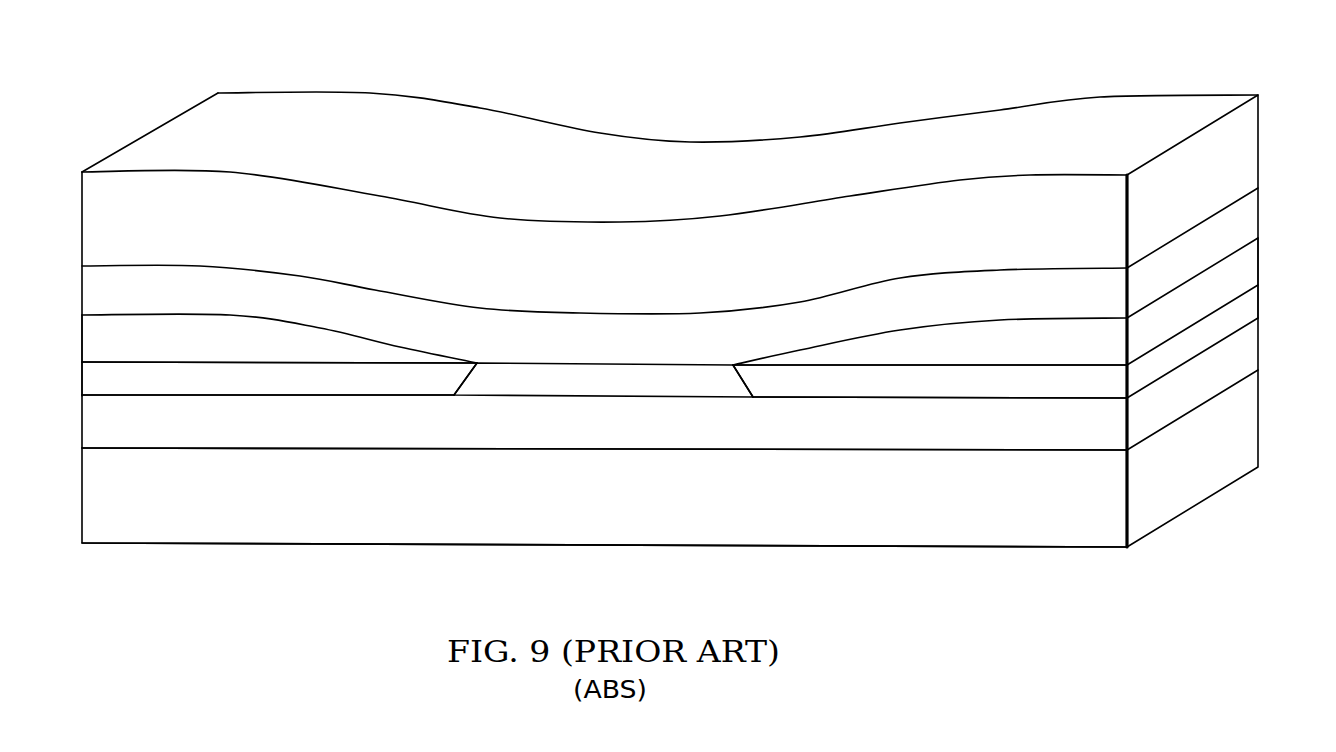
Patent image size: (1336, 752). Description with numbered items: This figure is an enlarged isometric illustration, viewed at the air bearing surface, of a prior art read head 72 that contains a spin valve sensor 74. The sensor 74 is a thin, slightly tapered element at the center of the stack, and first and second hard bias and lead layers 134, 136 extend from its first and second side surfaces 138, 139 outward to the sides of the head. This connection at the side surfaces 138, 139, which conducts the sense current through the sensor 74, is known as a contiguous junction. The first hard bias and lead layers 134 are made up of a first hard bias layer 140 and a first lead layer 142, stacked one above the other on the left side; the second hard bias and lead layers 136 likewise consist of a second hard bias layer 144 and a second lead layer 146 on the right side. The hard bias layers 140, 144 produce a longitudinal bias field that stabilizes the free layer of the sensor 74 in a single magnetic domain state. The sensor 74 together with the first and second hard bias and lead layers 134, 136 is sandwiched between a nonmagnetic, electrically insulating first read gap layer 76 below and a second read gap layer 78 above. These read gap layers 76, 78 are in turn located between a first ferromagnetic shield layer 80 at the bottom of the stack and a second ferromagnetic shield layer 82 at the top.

The read head 72 is at (751, 96).
The spin valve sensor 74 is at (513, 349).
The first read gap layer 76 is at (393, 435).
The second read gap layer 78 is at (371, 305).
The first ferromagnetic shield layer 80 is at (197, 517).
The second ferromagnetic shield layer 82 is at (511, 133).
The first hard bias and lead layers 134 is at (75, 318).
The second hard bias and lead layers 136 is at (1265, 238).
The first side surface 138 is at (455, 379).
The second side surface 139 is at (747, 382).
The first hard bias layer 140 is at (112, 378).
The first lead layer 142 is at (119, 335).
The second hard bias layer 144 is at (1063, 383).
The second lead layer 146 is at (1068, 343).